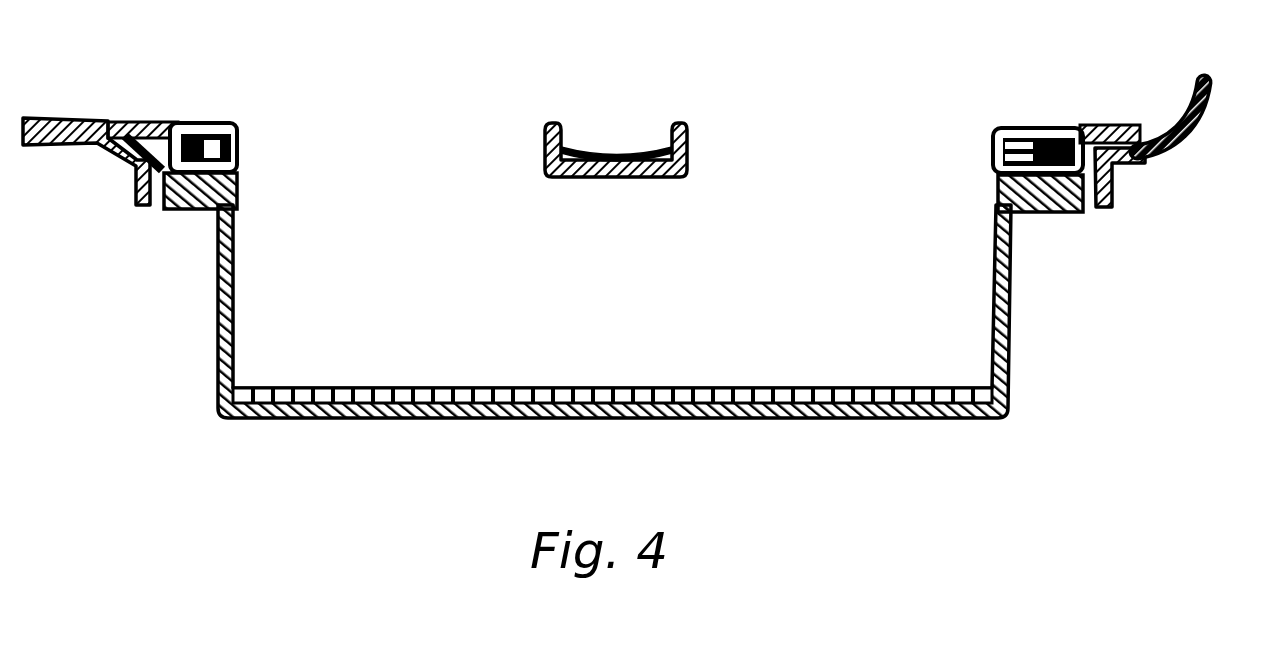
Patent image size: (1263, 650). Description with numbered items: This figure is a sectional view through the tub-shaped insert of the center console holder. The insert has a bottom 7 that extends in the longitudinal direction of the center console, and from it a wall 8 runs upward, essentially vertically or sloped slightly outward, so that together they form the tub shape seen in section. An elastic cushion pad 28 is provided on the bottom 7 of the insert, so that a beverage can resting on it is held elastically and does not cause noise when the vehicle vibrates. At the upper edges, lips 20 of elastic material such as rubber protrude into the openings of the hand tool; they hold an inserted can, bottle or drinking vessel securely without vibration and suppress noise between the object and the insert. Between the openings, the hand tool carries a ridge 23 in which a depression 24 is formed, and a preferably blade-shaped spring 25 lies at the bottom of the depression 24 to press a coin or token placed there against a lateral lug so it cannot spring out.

The bottom 7 is at (614, 311).
The wall 8 is at (993, 277).
The elastic cushion pad 28 is at (462, 390).
The lips 20 is at (146, 124).
The ridge 23 is at (660, 121).
The depression 24 is at (632, 108).
The spring 25 is at (579, 146).